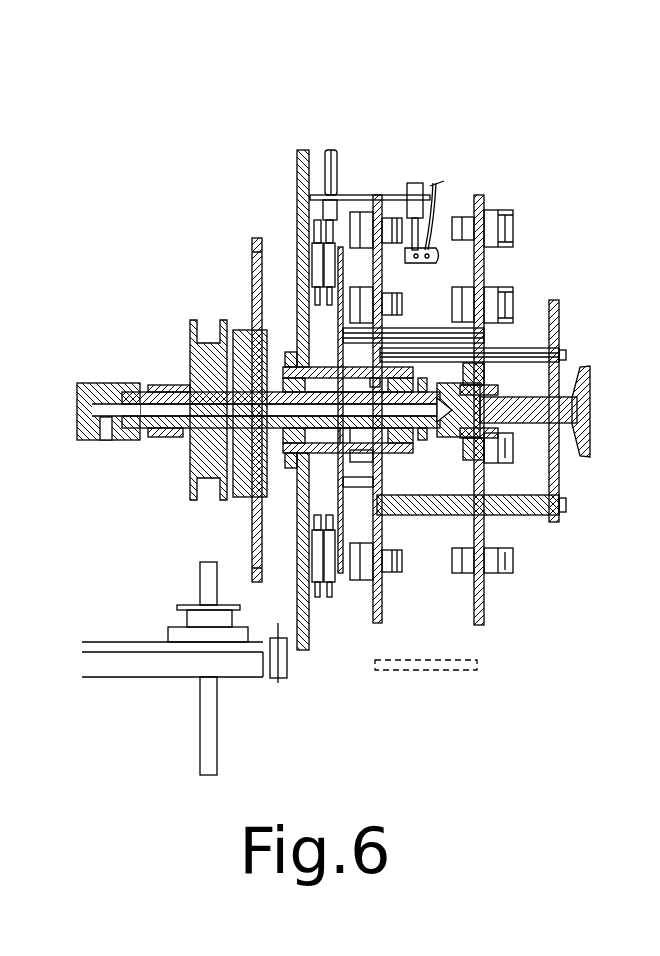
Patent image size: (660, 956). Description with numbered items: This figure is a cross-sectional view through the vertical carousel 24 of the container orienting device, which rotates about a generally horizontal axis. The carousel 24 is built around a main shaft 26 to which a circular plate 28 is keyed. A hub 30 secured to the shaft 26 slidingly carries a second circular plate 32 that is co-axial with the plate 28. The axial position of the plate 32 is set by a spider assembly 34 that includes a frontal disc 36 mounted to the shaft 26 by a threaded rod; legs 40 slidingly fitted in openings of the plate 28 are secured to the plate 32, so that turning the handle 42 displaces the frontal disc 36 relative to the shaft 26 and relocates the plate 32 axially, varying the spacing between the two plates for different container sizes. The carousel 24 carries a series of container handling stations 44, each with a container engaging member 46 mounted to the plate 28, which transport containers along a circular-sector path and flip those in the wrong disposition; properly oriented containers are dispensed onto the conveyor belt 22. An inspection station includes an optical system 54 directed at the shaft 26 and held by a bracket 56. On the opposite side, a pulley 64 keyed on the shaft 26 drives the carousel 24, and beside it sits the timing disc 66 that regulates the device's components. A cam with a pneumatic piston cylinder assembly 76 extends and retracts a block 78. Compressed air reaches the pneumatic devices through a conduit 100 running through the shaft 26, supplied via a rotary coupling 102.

The conveyor belt 22 is at (388, 672).
The carousel 24 is at (514, 150).
The main shaft 26 is at (170, 437).
The circular plate 28 is at (480, 195).
The hub 30 is at (322, 365).
The circular plate 32 is at (378, 195).
The spider assembly 34 is at (557, 300).
The frontal disc 36 is at (575, 366).
The legs 40 is at (515, 348).
The handle 42 is at (588, 458).
The container handling station 44 is at (460, 620).
The container engaging member 46 is at (515, 298).
The optical system 54 is at (433, 264).
The bracket 56 is at (425, 258).
The pulley 64 is at (192, 362).
The timing disc 66 is at (252, 300).
The pneumatic piston cylinder assembly 76 is at (328, 150).
The block 78 is at (355, 195).
The conduit 100 is at (132, 413).
The rotary coupling 102 is at (77, 423).